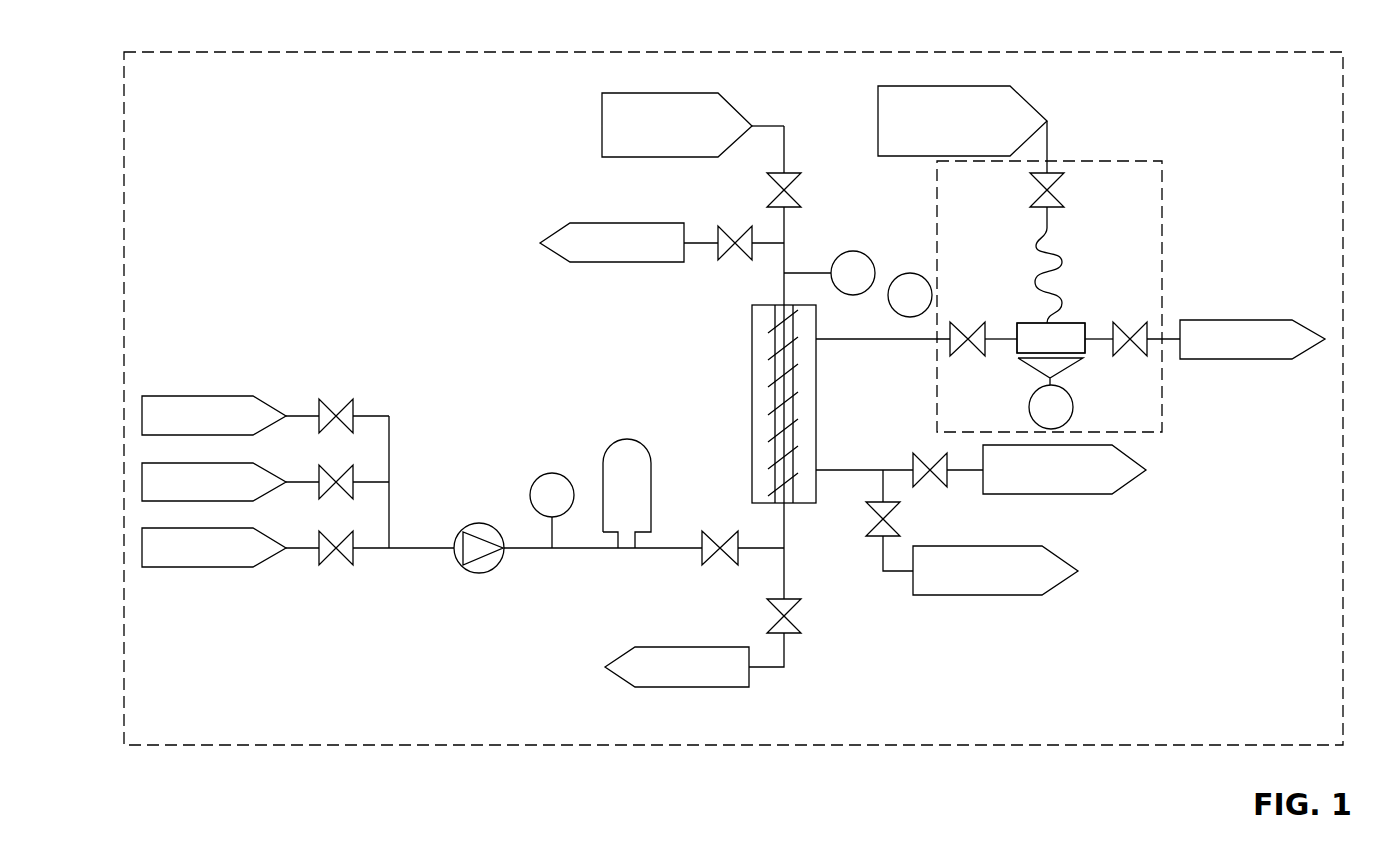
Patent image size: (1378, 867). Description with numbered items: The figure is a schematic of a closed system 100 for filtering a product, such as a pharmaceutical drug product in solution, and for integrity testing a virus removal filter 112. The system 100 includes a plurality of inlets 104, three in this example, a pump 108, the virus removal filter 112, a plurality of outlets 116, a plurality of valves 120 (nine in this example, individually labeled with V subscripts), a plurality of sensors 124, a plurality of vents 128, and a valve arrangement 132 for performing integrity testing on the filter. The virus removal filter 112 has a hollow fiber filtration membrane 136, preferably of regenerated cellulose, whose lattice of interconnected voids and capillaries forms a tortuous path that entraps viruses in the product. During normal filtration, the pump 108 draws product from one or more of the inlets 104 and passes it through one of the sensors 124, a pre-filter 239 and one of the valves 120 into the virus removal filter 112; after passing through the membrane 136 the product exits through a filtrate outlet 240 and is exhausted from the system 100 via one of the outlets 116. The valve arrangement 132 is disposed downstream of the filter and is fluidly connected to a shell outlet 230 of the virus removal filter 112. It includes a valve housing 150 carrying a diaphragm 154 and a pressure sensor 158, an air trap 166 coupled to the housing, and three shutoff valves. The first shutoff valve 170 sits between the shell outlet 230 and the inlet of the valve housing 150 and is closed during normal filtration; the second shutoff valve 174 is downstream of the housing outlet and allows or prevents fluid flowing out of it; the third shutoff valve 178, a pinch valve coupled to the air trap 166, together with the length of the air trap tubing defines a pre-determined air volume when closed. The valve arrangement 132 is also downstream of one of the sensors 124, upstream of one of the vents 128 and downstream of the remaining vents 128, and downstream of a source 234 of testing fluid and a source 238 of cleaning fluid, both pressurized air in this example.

The closed system 100 is at (210, 38).
The inlets 104 is at (228, 372).
The pump 108 is at (481, 523).
The virus removal filter 112 is at (752, 378).
The outlets 116 is at (1146, 470).
The valves 120 is at (383, 393).
The sensors 124 is at (552, 473).
The vents 128 is at (628, 263).
The valve arrangement 132 is at (1163, 207).
The hollow fiber filtration membrane 136 is at (795, 380).
The valve housing 150 is at (1093, 348).
The diaphragm 154 is at (1076, 376).
The pressure sensor 158 is at (1029, 407).
The air trap 166 is at (1062, 248).
The first shutoff valve 170 is at (970, 335).
The second shutoff valve 174 is at (1128, 335).
The third shutoff valve 178 is at (1052, 193).
The shell outlet 230 is at (817, 339).
The source of testing fluid 234 is at (669, 93).
The source of cleaning fluid 238 is at (948, 86).
The pre-filter 239 is at (630, 440).
The filtrate outlet 240 is at (817, 470).